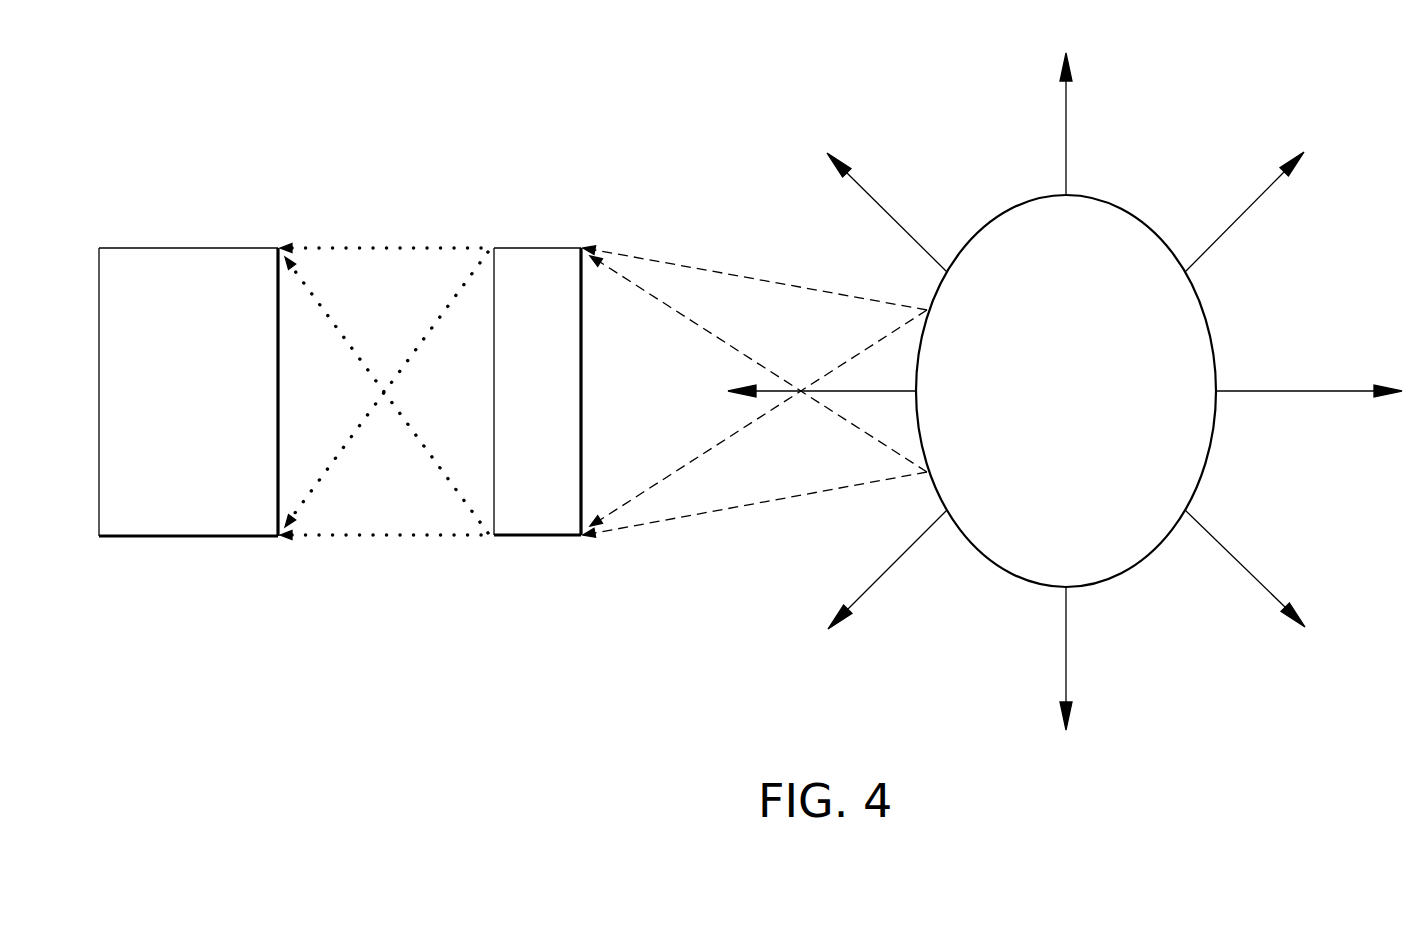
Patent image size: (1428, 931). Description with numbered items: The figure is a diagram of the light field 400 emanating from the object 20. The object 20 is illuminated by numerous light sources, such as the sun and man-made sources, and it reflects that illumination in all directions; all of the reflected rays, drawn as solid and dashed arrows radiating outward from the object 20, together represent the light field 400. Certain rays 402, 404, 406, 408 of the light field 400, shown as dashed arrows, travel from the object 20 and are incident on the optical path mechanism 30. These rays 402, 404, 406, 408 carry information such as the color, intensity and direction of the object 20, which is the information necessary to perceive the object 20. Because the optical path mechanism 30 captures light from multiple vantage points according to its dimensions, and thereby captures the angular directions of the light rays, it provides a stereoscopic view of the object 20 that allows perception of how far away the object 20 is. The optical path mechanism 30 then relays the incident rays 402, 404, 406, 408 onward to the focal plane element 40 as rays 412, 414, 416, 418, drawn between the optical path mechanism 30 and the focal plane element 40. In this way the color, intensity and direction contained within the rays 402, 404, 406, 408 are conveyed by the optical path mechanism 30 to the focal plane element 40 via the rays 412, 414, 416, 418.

The object 20 is at (1080, 476).
The optical path mechanism 30 is at (551, 515).
The focal plane element 40 is at (203, 515).
The light field 400 is at (1318, 684).
The ray 402 is at (727, 272).
The ray 404 is at (657, 296).
The ray 406 is at (672, 478).
The ray 408 is at (763, 503).
The ray 412 is at (380, 246).
The ray 414 is at (440, 323).
The ray 416 is at (448, 472).
The ray 418 is at (393, 538).